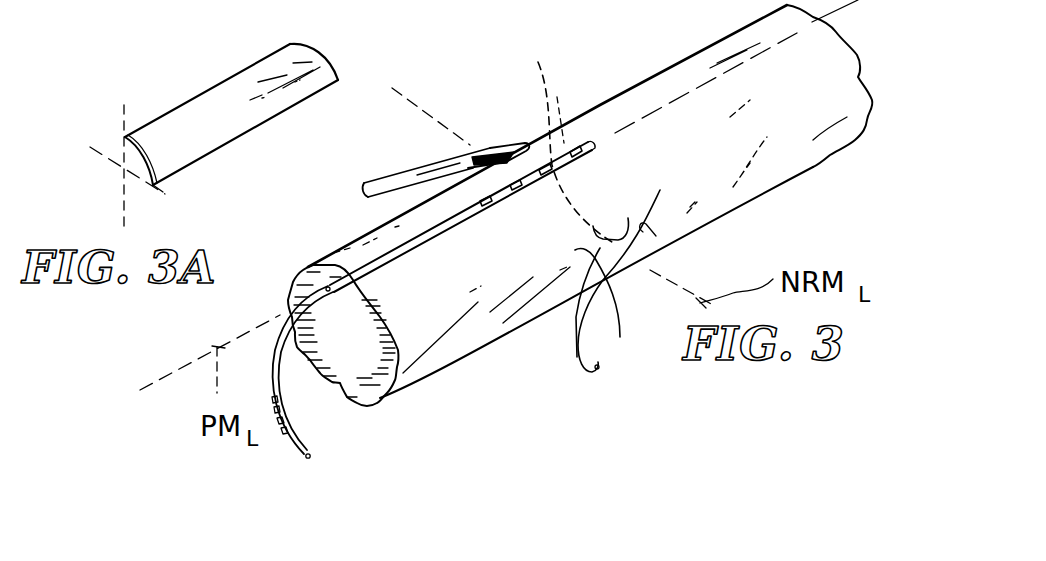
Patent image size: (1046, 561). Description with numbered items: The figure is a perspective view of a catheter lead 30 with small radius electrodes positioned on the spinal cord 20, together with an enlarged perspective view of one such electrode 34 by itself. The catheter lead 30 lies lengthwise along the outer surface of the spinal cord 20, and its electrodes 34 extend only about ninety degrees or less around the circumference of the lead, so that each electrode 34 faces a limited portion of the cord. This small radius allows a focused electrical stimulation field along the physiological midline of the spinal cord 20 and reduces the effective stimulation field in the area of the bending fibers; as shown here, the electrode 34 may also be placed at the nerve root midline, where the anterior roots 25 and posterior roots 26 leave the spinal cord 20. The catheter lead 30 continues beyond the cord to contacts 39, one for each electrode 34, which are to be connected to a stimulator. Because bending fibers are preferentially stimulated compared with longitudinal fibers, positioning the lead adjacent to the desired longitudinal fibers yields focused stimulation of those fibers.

In FIG. 3, the spinal cord 20 is at (793, 160).
In FIG. 3, the anterior roots 25 is at (518, 108).
In FIG. 3, the posterior roots 26 is at (421, 189).
In FIG. 3, the catheter lead 30 is at (487, 233).
In FIG. 3A, the electrode 34 is at (202, 128).
In FIG. 3, the electrode 34 is at (562, 143).
In FIG. 3, the contact 39 is at (287, 442).